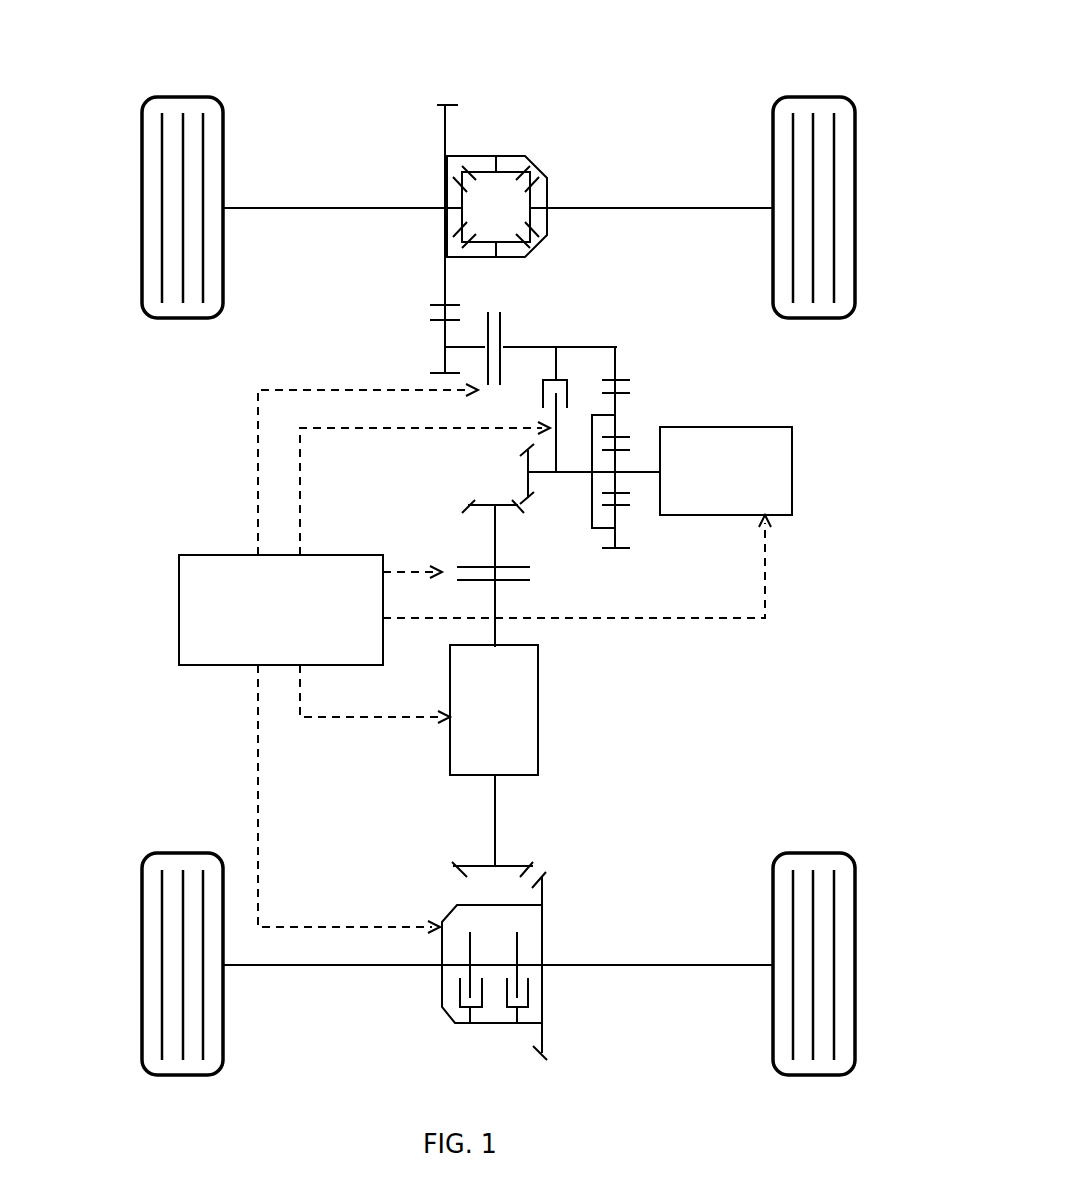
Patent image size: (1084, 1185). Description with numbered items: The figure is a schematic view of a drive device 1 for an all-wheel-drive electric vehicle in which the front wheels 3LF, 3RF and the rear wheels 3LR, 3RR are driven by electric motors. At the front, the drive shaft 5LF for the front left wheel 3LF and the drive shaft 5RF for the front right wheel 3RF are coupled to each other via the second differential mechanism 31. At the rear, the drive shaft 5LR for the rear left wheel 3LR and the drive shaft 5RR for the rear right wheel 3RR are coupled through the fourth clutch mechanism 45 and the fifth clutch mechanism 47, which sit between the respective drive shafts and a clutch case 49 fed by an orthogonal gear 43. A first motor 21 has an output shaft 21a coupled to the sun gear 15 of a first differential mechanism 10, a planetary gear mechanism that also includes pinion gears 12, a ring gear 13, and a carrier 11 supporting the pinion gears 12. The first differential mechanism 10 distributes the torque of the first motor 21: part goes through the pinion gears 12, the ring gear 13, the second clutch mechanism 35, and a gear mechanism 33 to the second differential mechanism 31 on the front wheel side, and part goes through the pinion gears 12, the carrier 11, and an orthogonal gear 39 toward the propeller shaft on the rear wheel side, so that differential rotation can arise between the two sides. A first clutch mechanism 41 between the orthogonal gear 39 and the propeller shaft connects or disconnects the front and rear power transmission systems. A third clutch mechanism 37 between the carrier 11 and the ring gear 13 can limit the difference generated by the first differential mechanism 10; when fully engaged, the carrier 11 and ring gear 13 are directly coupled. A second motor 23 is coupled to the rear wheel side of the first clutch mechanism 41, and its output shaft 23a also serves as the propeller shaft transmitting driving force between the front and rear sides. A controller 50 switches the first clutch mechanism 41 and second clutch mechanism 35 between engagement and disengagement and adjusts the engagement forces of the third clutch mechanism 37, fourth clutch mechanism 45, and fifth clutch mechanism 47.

The drive device 1 is at (781, 67).
The front left wheel 3LF is at (142, 236).
The front right wheel 3RF is at (855, 233).
The rear left wheel 3LR is at (142, 982).
The rear right wheel 3RR is at (855, 980).
The drive shaft for the front left wheel 5LF is at (322, 207).
The drive shaft for the front right wheel 5RF is at (663, 207).
The drive shaft for the rear left wheel 5LR is at (310, 967).
The drive shaft for the rear right wheel 5RR is at (650, 967).
The first differential mechanism 10 is at (620, 345).
The carrier 11 is at (587, 508).
The pinion gears 12 is at (620, 403).
The ring gear 13 is at (618, 380).
The sun gear 15 is at (618, 478).
The first motor 21 is at (750, 427).
The output shaft of the first motor 21a is at (642, 468).
The second motor 23 is at (538, 755).
The output shaft of the second motor 23a is at (495, 802).
The second differential mechanism 31 is at (489, 139).
The gear mechanism 33 is at (413, 312).
The second clutch mechanism 35 is at (497, 305).
The third clutch mechanism 37 is at (556, 343).
The orthogonal gear 39 is at (480, 492).
The first clutch mechanism 41 is at (448, 557).
The orthogonal gear 43 is at (441, 862).
The fourth clutch mechanism 45 is at (452, 1010).
The fifth clutch mechanism 47 is at (500, 1010).
The clutch case 49 is at (545, 917).
The controller 50 is at (195, 555).